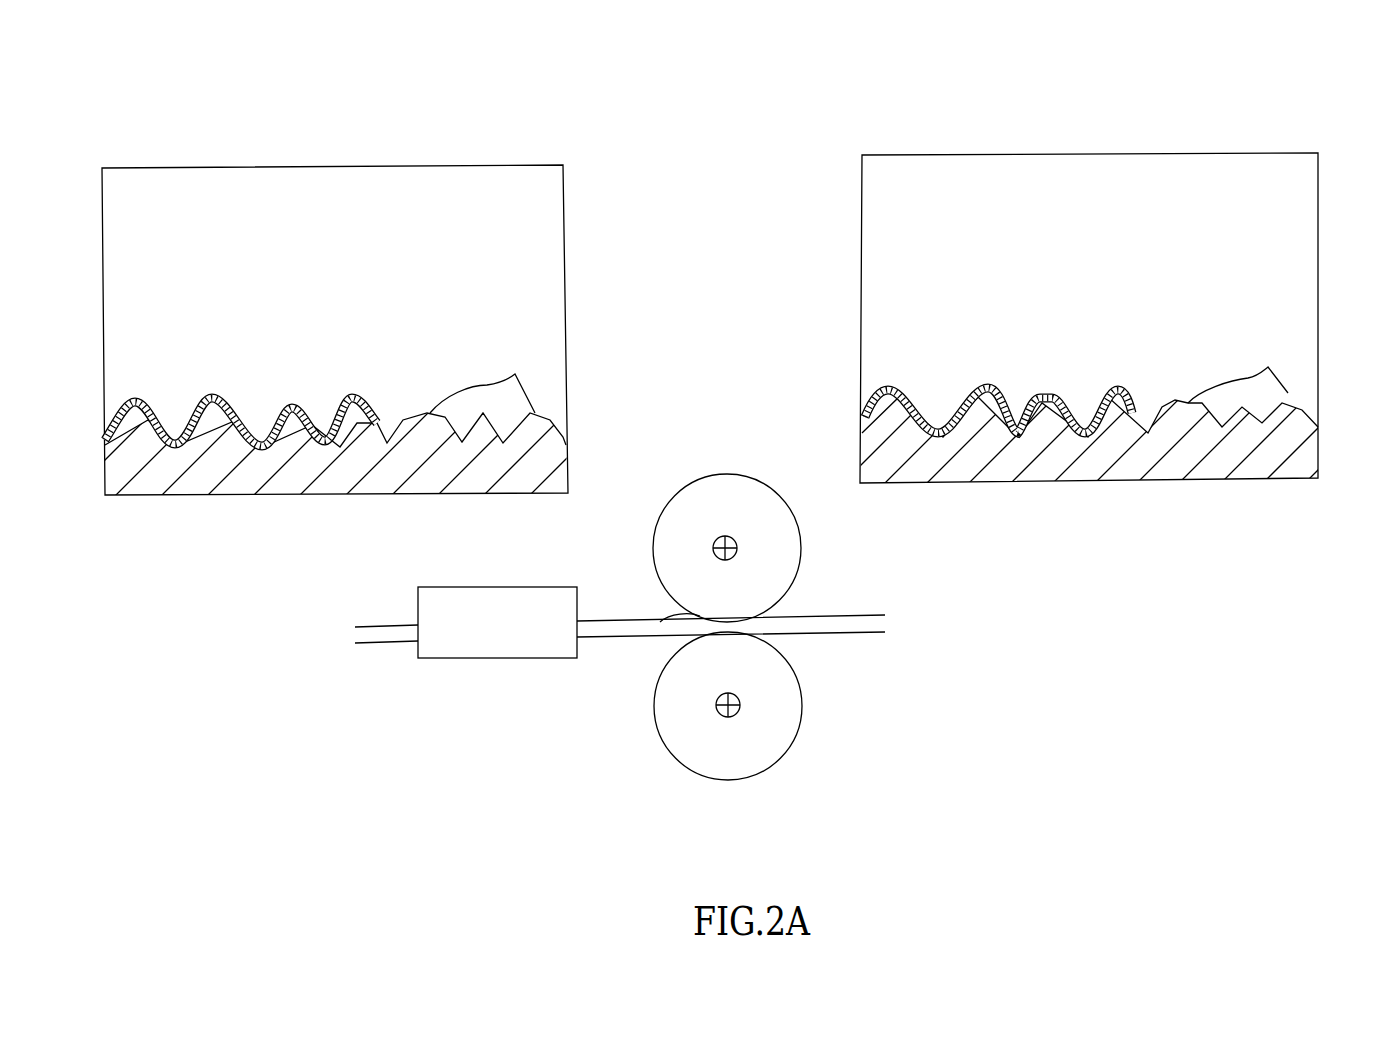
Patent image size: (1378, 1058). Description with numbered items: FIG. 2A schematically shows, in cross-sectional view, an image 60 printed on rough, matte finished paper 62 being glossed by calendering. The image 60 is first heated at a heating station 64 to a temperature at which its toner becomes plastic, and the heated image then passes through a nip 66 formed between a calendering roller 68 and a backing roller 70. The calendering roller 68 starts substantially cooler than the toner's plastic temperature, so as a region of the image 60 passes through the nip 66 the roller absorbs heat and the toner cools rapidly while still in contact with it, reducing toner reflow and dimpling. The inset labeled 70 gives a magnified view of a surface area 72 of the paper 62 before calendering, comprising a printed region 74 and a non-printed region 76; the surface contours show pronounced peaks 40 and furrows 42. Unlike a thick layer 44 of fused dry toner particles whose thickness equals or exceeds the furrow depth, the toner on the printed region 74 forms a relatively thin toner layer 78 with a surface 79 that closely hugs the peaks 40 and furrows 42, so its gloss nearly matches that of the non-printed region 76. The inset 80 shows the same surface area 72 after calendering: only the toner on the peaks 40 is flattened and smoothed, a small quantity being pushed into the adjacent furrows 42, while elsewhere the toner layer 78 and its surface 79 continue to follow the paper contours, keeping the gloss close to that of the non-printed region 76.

The peaks 40 is at (525, 403).
The furrows 42 is at (388, 443).
The layer of fused dry toner particles 44 is at (152, 397).
The image 60 is at (388, 623).
The matte finished paper 62 is at (372, 476).
The heating station 64 is at (503, 650).
The nip 66 is at (693, 613).
The calendering roller 68 is at (733, 487).
The backing roller 70 is at (727, 767).
The surface area 72 is at (362, 250).
The printed region 74 is at (250, 303).
The non-printed region 76 is at (500, 303).
The toner layer 78 is at (225, 397).
The surface of toner layer 79 is at (272, 407).
The inset 80 is at (1258, 97).